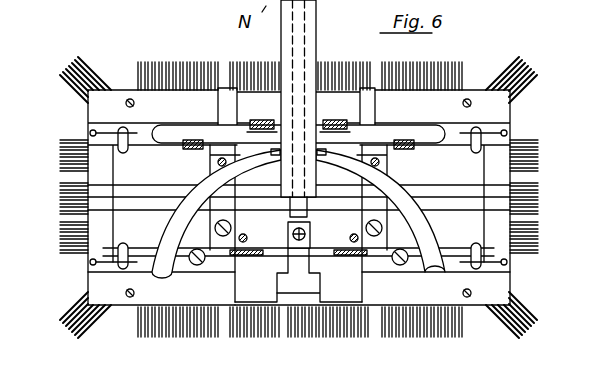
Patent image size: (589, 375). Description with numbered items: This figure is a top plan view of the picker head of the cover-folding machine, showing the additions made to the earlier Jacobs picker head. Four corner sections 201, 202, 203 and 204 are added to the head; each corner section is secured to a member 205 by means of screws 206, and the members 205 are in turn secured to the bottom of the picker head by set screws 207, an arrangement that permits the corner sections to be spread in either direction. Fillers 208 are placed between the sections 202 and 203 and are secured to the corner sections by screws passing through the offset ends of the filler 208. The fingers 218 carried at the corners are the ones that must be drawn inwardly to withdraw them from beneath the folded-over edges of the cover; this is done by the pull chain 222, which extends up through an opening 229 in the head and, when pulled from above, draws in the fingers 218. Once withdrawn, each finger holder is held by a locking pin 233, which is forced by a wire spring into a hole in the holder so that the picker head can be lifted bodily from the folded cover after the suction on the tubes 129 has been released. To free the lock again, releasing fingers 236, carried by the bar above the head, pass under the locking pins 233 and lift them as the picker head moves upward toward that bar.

The suction tubes 129 is at (252, 145).
The corner section 201 is at (493, 115).
The corner section 202 is at (505, 278).
The corner section 203 is at (98, 281).
The corner section 204 is at (88, 115).
The member 205 is at (227, 107).
The screws 206 is at (223, 220).
The set screws 207 is at (243, 234).
The fillers 208 is at (278, 88).
The fingers 218 is at (365, 336).
The pull chain 222 is at (289, 252).
The opening 229 is at (309, 240).
The locking pin 233 is at (122, 242).
The releasing fingers 236 is at (344, 122).